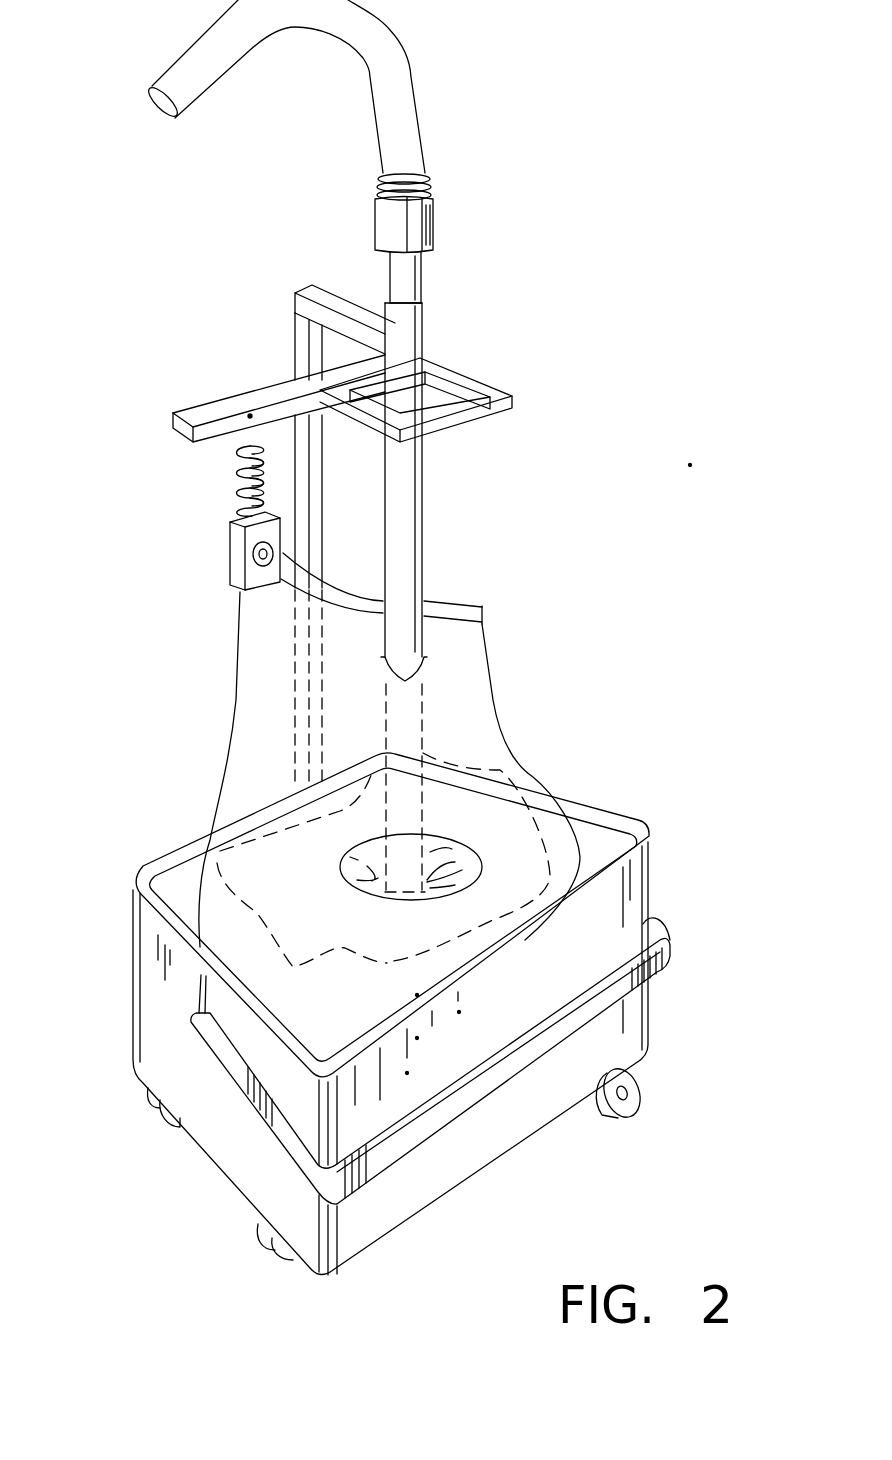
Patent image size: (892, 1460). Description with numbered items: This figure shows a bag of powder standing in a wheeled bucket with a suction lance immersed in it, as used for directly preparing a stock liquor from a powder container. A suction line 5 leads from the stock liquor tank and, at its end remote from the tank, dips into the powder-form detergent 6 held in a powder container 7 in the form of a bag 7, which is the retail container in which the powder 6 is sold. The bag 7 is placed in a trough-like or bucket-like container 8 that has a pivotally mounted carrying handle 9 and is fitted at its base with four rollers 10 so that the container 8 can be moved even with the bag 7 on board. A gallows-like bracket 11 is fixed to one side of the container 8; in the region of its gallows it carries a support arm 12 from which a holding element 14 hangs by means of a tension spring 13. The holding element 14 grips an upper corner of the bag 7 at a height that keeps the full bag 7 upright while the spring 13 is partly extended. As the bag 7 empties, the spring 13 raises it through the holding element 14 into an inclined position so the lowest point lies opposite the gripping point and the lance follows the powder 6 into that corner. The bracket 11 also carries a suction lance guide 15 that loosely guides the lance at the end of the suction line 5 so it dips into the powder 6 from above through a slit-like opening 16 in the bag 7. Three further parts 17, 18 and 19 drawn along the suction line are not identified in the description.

The suction line 5 is at (375, 48).
The powder-form detergent 6 is at (515, 785).
The powder container in the form of a bag 7 is at (475, 667).
The trough-like or bucket-like container 8 is at (137, 977).
The carrying handle 9 is at (650, 927).
The rollers 10 is at (147, 1094).
The gallows-like bracket 11 is at (317, 296).
The support arm 12 is at (233, 407).
The tension spring 13 is at (238, 472).
The holding element 14 is at (258, 557).
The suction lance guide 15 is at (492, 394).
The opening 16 is at (428, 660).
The pipe 17 is at (410, 283).
The coupling nut 18 is at (432, 222).
The nozzle tube 19 is at (413, 340).